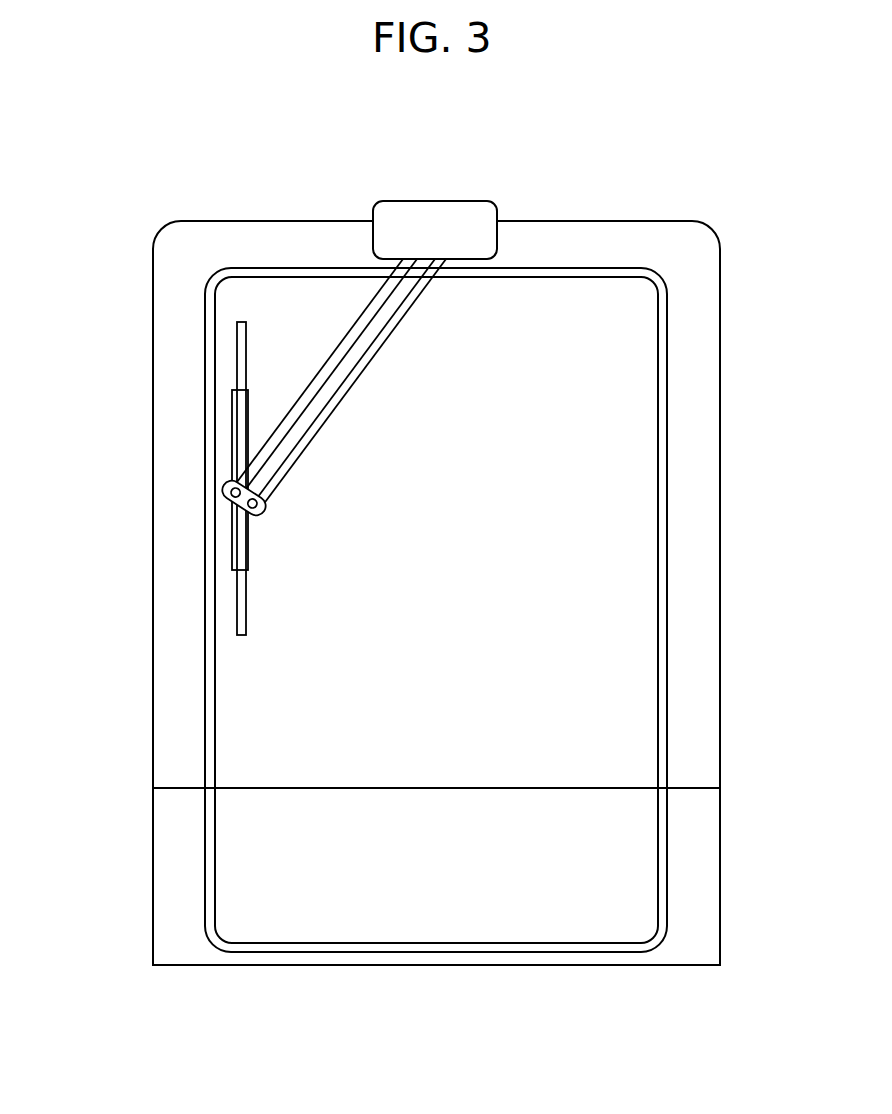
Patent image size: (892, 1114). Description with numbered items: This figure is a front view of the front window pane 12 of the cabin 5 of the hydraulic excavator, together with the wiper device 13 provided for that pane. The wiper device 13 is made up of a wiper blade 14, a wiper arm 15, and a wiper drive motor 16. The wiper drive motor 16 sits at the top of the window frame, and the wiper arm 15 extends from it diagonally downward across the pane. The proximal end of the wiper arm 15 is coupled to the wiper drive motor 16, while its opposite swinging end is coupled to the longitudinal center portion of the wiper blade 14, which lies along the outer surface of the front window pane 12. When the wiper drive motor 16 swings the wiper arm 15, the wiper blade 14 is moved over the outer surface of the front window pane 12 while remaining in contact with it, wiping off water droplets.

The cabin 5 is at (642, 221).
The front window pane 12 is at (620, 511).
The wiper device 13 is at (281, 398).
The wiper blade 14 is at (240, 610).
The wiper arm 15 is at (288, 415).
The wiper drive motor 16 is at (430, 201).